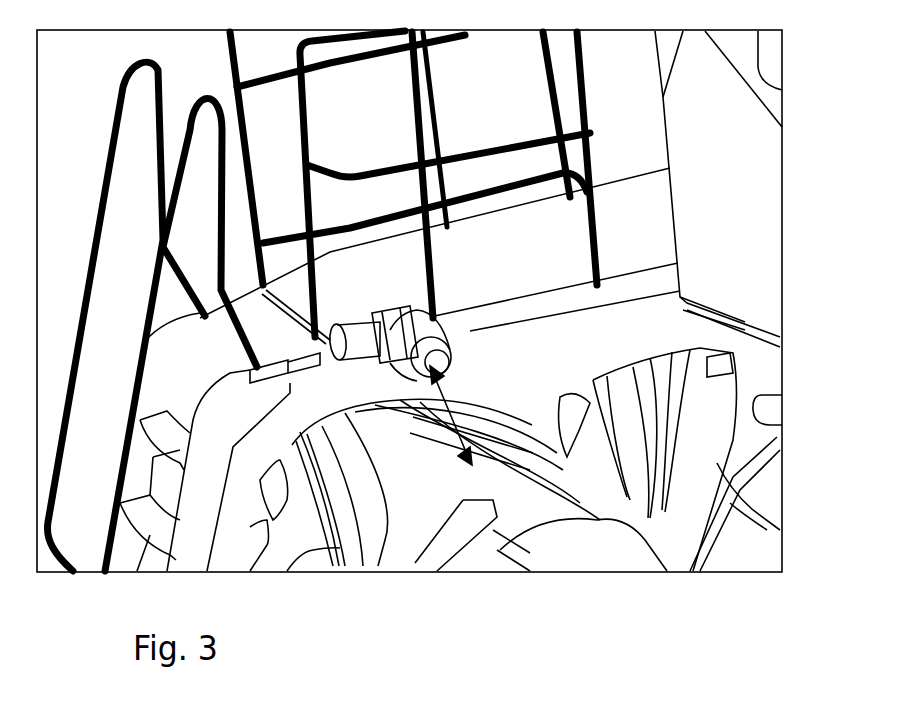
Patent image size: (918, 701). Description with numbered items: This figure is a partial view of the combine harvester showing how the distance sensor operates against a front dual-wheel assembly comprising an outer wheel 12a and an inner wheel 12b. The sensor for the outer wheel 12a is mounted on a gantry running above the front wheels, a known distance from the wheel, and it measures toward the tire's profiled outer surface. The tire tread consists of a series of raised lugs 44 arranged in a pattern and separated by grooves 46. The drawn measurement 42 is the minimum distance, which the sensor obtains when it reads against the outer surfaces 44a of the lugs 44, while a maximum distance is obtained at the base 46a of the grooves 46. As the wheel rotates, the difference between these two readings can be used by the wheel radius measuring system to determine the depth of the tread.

The outer wheel 12a is at (550, 535).
The inner wheel 12b is at (745, 545).
The minimum distance Dmin between sensor and tire 42 is at (485, 400).
The lugs 44 is at (333, 558).
The outer surfaces of the lugs 44a is at (778, 403).
The grooves 46 is at (385, 540).
The base of the grooves 46a is at (720, 465).